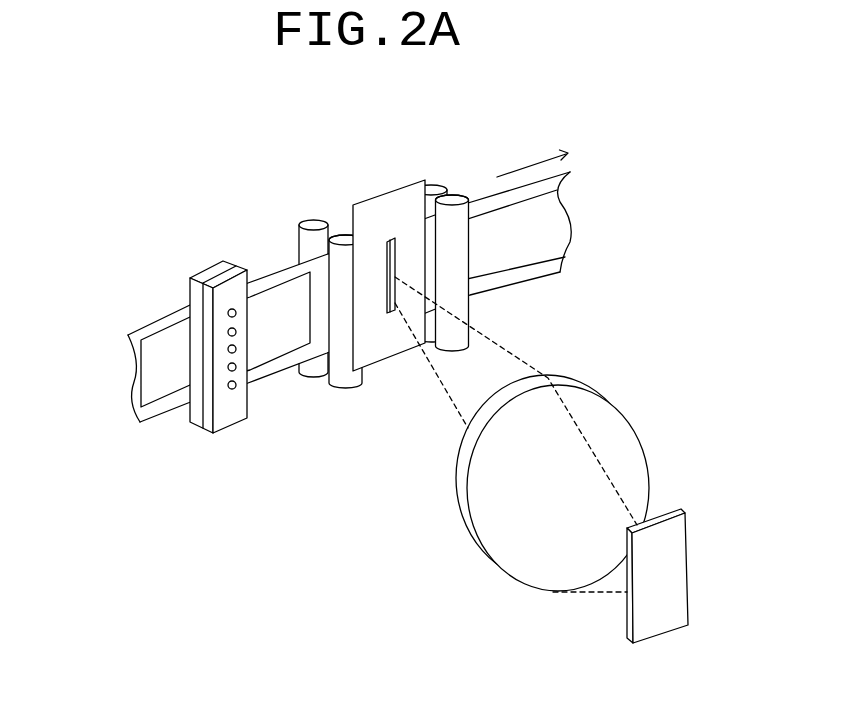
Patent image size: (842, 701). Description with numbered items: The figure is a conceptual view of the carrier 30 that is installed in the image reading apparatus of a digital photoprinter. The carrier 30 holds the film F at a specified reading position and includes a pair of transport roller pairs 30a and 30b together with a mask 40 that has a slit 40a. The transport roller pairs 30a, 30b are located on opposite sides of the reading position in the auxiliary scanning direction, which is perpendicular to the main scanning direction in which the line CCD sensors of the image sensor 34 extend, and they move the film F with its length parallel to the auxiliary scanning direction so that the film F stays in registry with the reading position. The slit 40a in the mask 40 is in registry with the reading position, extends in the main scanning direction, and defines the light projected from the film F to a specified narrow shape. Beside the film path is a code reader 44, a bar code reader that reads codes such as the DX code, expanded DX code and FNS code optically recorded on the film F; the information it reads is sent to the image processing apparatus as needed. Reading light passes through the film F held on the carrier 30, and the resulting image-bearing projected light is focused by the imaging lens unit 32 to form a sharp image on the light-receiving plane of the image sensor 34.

The carrier 30 is at (451, 297).
The transport roller pair 30a is at (343, 372).
The transport roller pair 30b is at (452, 277).
The imaging lens unit 32 is at (603, 418).
The image sensor 34 is at (670, 570).
The mask 40 is at (417, 275).
The slit 40a is at (390, 238).
The code reader 44 is at (212, 273).
The film F is at (543, 227).